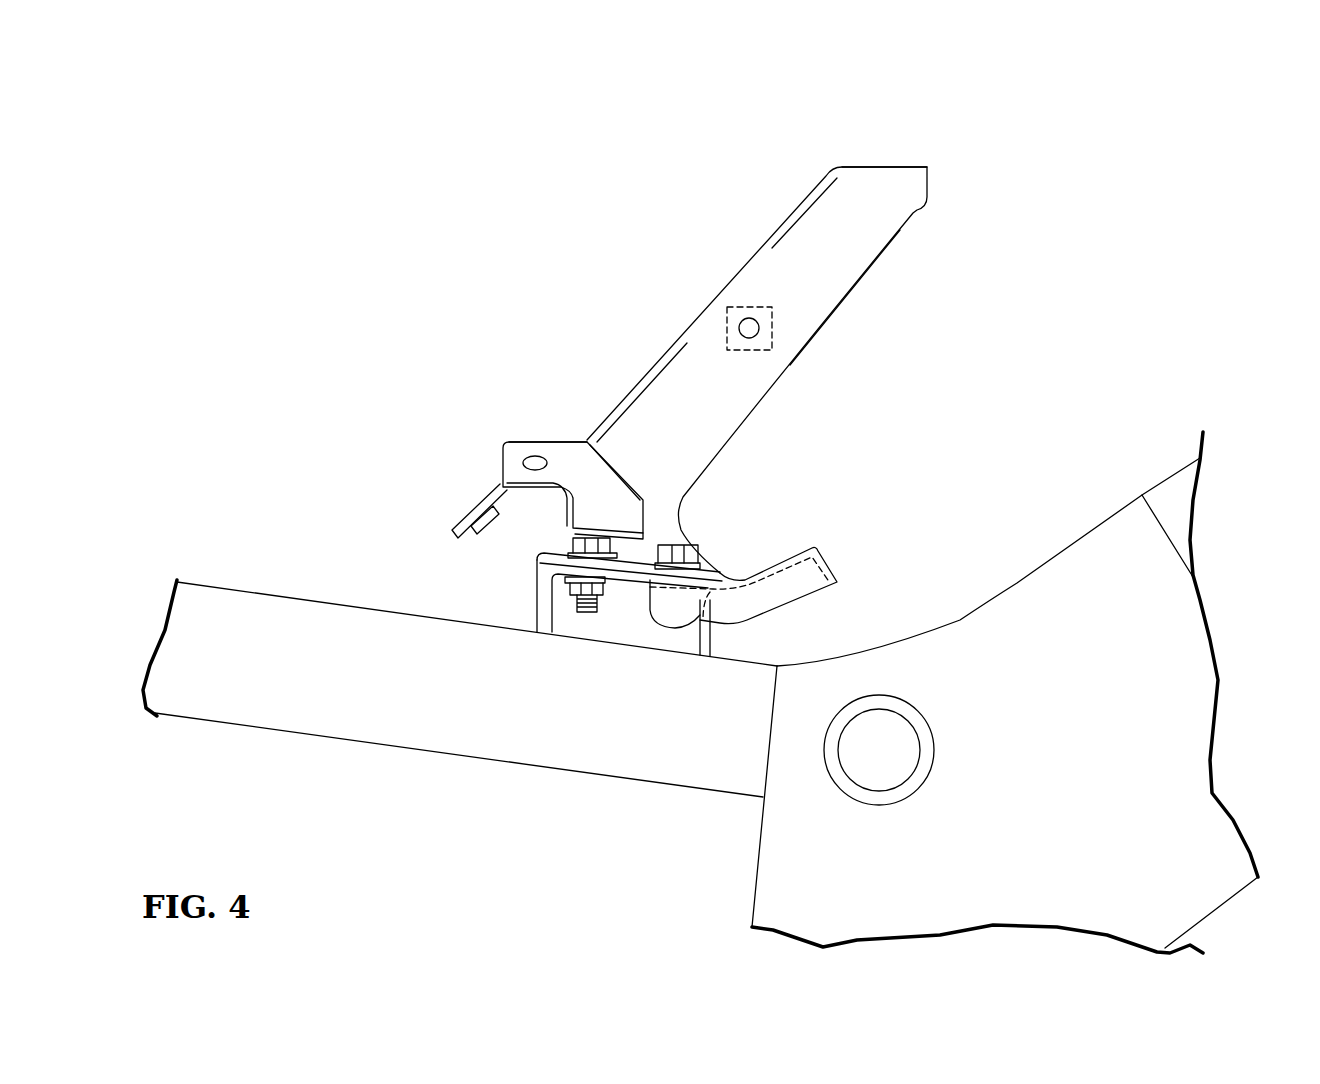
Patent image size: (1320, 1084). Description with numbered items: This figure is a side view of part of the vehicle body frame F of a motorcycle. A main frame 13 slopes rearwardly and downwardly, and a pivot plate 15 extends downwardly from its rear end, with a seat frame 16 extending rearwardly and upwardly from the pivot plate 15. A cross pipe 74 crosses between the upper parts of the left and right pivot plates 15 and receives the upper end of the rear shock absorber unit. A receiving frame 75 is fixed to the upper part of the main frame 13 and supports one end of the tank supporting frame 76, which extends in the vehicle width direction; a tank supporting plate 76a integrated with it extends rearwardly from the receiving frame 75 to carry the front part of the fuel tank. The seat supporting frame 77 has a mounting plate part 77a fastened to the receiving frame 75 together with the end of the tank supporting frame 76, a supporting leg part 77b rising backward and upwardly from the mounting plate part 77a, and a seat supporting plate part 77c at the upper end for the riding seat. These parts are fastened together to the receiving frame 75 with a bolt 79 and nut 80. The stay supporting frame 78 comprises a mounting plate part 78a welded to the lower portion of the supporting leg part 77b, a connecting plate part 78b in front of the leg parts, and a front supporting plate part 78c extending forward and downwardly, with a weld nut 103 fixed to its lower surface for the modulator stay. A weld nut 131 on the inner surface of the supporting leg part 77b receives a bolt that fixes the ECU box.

The main frame 13 is at (415, 694).
The pivot plate 15 is at (1017, 618).
The seat frame 16 is at (1182, 507).
The cross pipe 74 is at (923, 772).
The receiving frame 75 is at (540, 618).
The tank supporting frame 76 is at (828, 550).
The tank supporting plate 76a is at (808, 580).
The seat supporting frame 77 is at (737, 269).
The mounting plate part 77a is at (652, 612).
The supporting leg part 77b is at (810, 318).
The seat supporting plate part 77c is at (868, 167).
The stay supporting frame 78 is at (520, 438).
The mounting plate part 78a is at (608, 492).
The connecting plate part 78b is at (555, 440).
The front supporting plate part 78c is at (466, 513).
The bolt 79 is at (592, 538).
The nut 80 is at (601, 592).
The weld nut 103 is at (470, 506).
The weld nut 131 is at (753, 352).
The vehicle body frame F is at (300, 599).